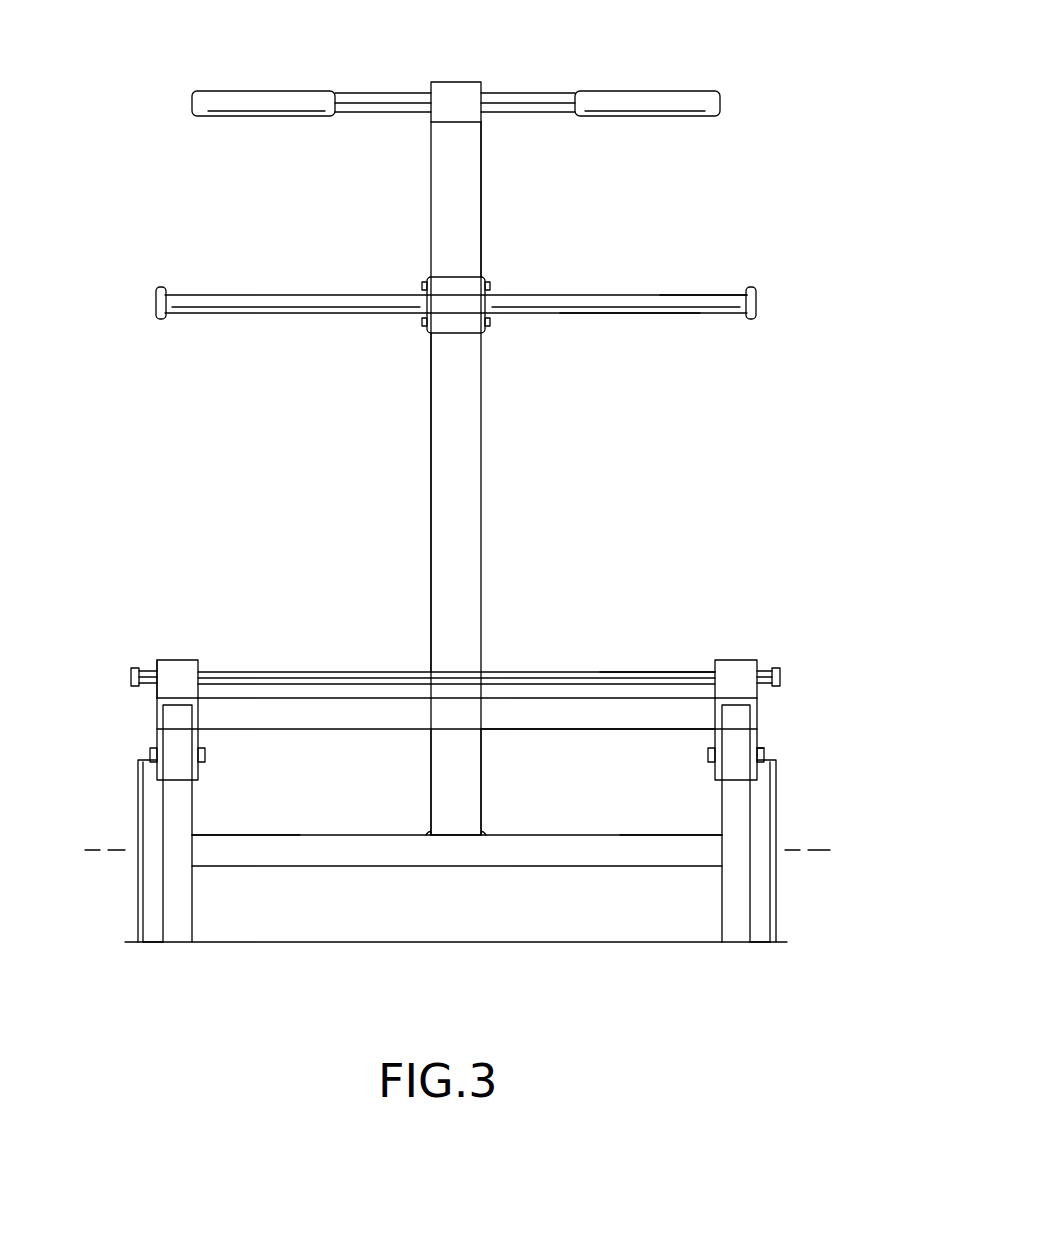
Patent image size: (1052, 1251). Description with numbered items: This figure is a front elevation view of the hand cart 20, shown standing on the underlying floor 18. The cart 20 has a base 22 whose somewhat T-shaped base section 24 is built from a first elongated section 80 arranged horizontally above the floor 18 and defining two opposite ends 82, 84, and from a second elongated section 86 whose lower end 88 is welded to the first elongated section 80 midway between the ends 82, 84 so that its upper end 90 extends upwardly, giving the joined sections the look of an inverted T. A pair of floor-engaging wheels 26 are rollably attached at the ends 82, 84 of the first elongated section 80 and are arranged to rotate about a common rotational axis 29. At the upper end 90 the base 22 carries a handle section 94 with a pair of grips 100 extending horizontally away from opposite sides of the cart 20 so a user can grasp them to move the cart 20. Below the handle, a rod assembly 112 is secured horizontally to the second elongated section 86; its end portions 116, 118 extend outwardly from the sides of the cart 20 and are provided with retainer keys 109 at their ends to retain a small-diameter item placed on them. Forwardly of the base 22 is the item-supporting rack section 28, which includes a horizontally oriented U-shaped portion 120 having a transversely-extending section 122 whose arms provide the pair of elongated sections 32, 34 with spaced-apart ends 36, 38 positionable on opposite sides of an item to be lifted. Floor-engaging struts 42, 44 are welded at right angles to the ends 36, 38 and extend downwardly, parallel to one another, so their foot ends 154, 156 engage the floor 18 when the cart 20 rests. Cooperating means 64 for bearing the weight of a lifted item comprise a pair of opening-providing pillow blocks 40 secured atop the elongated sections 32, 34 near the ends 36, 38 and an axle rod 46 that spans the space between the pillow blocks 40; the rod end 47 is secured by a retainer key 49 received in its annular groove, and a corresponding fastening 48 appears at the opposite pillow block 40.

The hand cart 20 is at (793, 110).
The base 22 is at (481, 545).
The second elongated section 86 is at (431, 430).
The upper end 90 is at (481, 178).
The handle section 94 is at (193, 92).
The grips 100 is at (312, 116).
The end portion 118 is at (300, 313).
The end portion 116 is at (630, 313).
The rod assembly 112 is at (697, 313).
The retainer key 109 is at (160, 318).
The cooperating means 64 is at (826, 603).
The elongated section 32 is at (137, 678).
The rod end 47 is at (140, 672).
The retainer key 49 is at (150, 676).
The pillow blocks 40 is at (178, 660).
The axle rod 46 is at (318, 672).
The item-supporting rack section 28 is at (678, 672).
The right fastener 48 is at (780, 668).
The U-shaped portion 120 is at (381, 715).
The transversely-extending section 122 is at (567, 705).
The end 36 is at (180, 706).
The elongated section 34 is at (757, 715).
The floor-engaging strut 42 is at (183, 912).
The floor-engaging strut 44 is at (735, 918).
The end 38 is at (735, 730).
The floor-engaging wheels 26 is at (150, 797).
The floor 18 is at (135, 940).
The foot end 154 is at (150, 942).
The foot end 156 is at (750, 935).
The common rotational axis 29 is at (815, 850).
The first elongated section 80 is at (665, 866).
The end 82 is at (220, 838).
The end 84 is at (710, 838).
The base section 24 is at (430, 785).
The lower end 88 is at (481, 797).